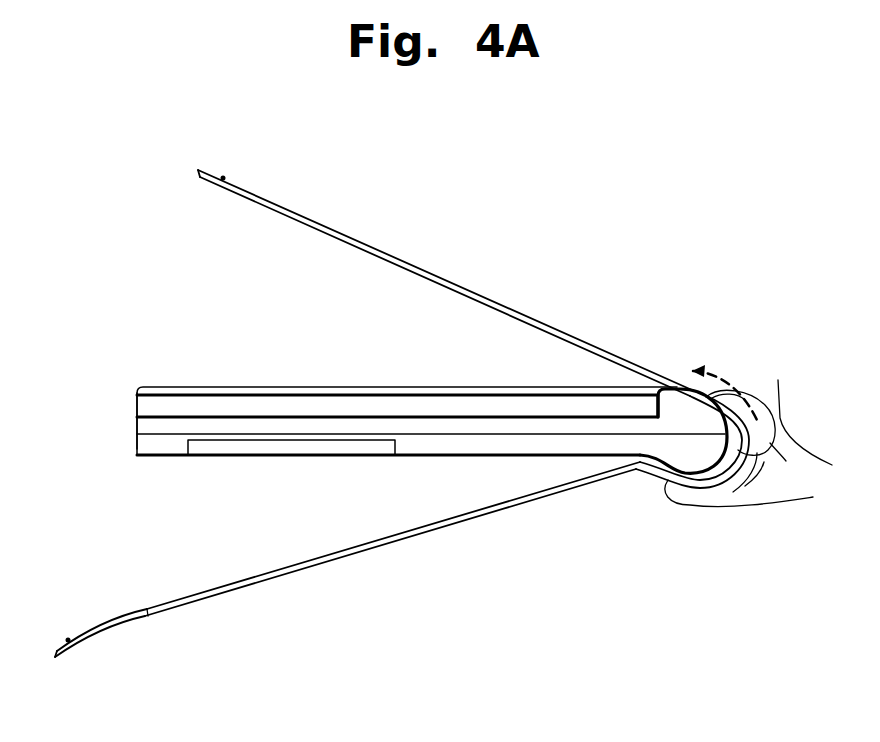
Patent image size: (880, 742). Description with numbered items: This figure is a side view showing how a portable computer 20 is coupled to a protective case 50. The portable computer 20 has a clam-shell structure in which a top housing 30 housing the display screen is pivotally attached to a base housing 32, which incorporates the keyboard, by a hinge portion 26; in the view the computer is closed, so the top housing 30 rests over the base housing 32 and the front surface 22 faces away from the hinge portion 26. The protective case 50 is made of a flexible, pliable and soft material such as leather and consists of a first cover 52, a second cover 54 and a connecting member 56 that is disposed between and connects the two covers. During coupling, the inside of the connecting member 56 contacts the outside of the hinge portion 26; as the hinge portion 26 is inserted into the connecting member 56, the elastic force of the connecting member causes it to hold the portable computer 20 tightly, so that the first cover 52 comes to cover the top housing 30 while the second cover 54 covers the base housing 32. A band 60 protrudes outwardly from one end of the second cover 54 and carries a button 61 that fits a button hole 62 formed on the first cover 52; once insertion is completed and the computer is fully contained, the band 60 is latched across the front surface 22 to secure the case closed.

The portable computer 20 is at (388, 410).
The front surface 22 is at (136, 431).
The hinge portion 26 is at (678, 405).
The top housing 30 is at (285, 386).
The base housing 32 is at (290, 457).
The protective case 50 is at (402, 416).
The first cover 52 is at (445, 258).
The second cover 54 is at (323, 563).
The connecting member 56 is at (773, 428).
The band 60 is at (101, 639).
The button 61 is at (68, 639).
The button hole 62 is at (224, 177).